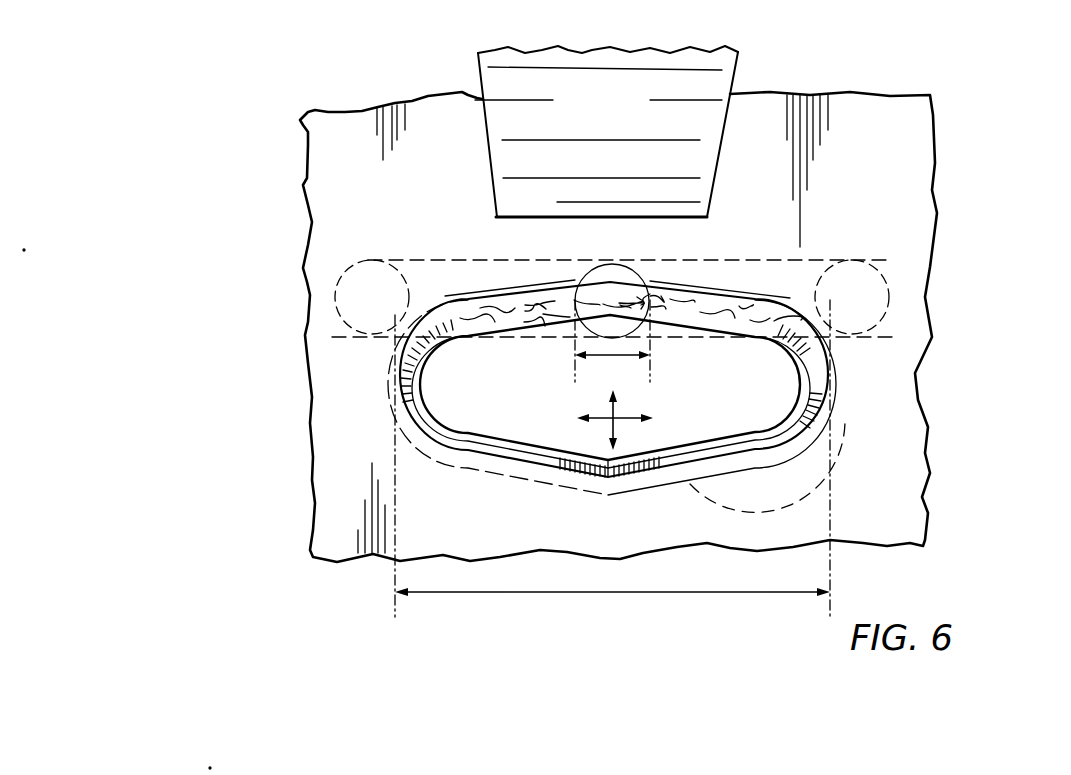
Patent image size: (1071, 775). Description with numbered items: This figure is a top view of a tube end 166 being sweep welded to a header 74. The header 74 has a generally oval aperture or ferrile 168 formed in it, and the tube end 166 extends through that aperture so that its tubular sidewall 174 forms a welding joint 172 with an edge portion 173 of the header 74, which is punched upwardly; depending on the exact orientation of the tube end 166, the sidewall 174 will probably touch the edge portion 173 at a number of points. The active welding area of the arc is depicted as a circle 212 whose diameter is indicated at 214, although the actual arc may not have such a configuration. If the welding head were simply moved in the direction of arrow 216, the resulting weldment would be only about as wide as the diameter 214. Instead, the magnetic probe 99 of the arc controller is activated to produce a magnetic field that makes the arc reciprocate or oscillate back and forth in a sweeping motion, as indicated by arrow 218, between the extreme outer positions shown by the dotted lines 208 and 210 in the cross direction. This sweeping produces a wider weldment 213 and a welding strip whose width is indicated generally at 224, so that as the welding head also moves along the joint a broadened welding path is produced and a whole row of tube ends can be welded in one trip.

The header 74 is at (353, 463).
The magnetic probe 99 is at (612, 124).
The tube end 166 is at (514, 420).
The oval aperture or ferrile 168 is at (503, 459).
The welding joint 172 is at (722, 452).
The edge portion 173 is at (790, 447).
The tubular sidewall 174 is at (758, 433).
The extreme end position (left) 208 is at (374, 256).
The extreme end position (right) 210 is at (857, 258).
The circle depicting active welding area 212 is at (627, 247).
The wider weldment 213 is at (548, 300).
The diameter 214 is at (577, 378).
The arrow indicating direction of welding head movement 216 is at (610, 424).
The arrow indicating sweeping motion 218 is at (627, 418).
The width of welding strip 224 is at (557, 592).